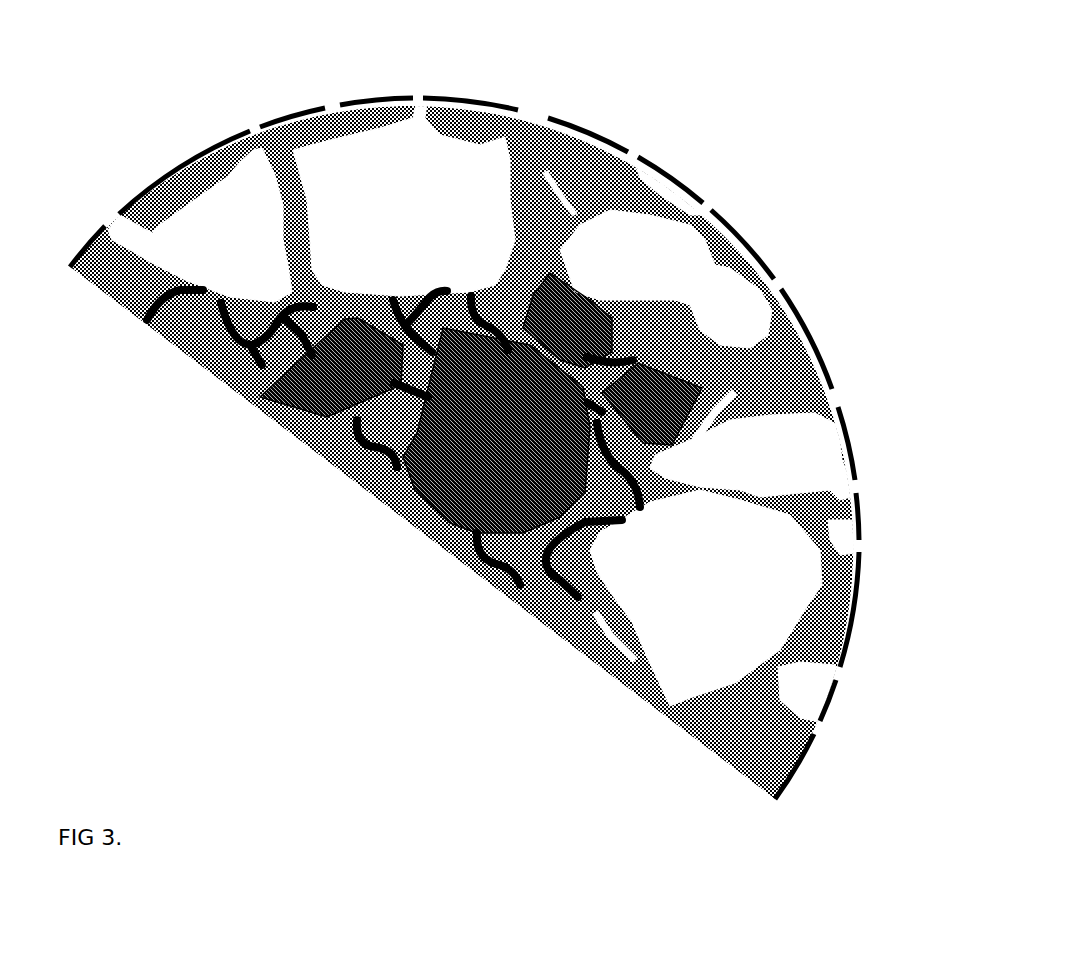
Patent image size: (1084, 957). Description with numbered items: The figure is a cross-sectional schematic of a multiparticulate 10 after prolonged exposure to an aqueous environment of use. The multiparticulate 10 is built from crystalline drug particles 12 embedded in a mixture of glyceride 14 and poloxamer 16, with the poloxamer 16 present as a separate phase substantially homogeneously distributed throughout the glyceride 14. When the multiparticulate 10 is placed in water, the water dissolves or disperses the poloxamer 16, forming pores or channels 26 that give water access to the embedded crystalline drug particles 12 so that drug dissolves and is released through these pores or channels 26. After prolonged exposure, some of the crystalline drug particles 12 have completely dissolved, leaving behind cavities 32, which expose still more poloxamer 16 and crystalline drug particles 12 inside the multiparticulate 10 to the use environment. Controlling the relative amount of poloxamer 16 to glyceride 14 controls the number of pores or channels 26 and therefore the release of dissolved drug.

The multiparticulate 10 is at (515, 408).
The crystalline drug particles 12 is at (417, 487).
The glyceride 14 is at (780, 330).
The poloxamer 16 is at (240, 337).
The pores or channels 26 is at (537, 133).
The cavities 32 is at (382, 193).